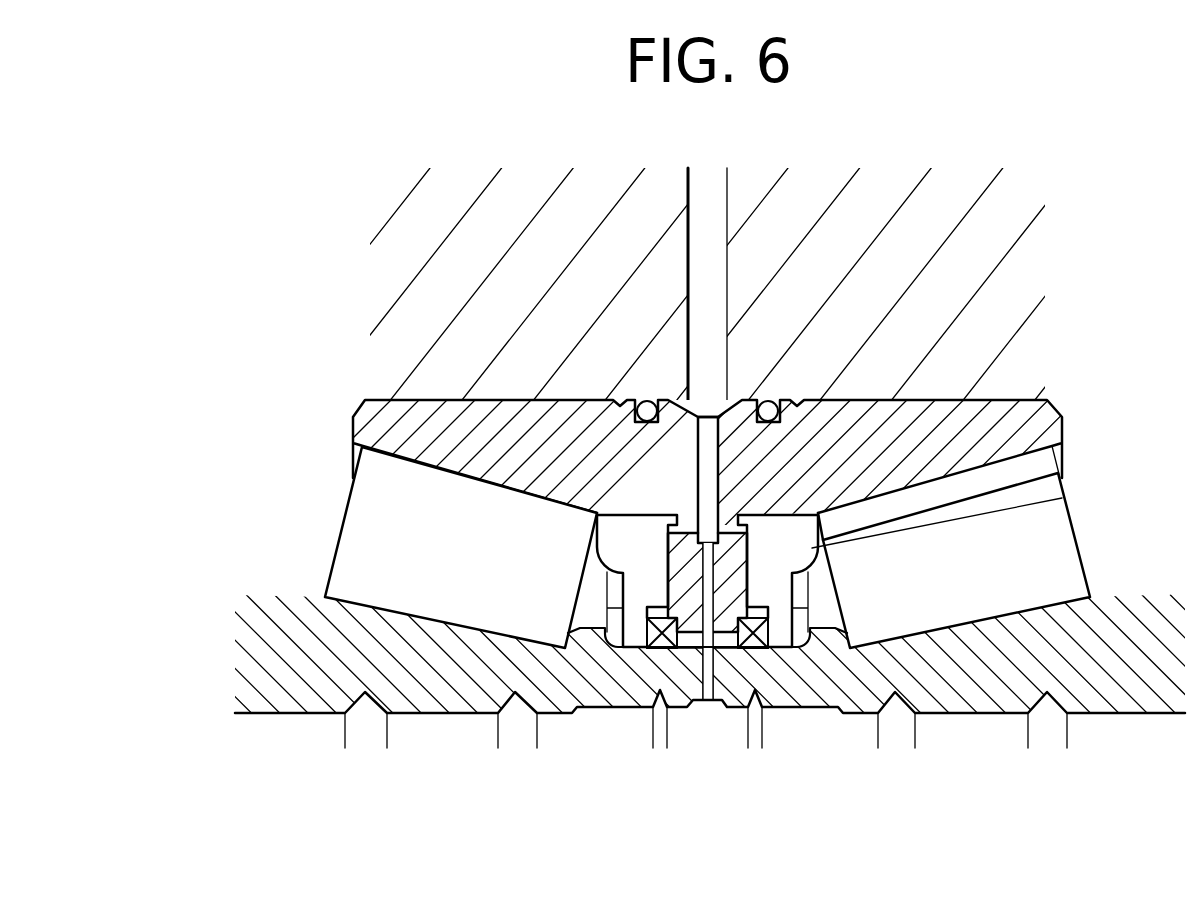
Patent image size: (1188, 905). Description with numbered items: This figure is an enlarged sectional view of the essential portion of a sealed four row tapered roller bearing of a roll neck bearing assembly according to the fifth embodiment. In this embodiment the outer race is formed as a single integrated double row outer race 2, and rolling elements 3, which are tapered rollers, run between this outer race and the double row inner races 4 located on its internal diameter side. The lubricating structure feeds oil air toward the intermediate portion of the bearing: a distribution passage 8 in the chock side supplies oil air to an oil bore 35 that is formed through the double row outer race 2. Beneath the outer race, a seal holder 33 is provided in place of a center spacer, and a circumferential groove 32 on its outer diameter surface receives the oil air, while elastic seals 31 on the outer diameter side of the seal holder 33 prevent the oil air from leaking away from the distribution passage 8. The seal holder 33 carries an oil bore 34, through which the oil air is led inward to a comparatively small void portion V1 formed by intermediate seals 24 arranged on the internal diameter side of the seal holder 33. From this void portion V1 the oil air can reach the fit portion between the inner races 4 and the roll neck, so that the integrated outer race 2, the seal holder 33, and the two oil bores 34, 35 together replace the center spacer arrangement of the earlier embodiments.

The double row outer race 2 is at (923, 427).
The rolling elements 3 is at (1040, 527).
The double row inner races 4 is at (972, 698).
The distribution passages 8 is at (717, 265).
The intermediate seals 24 is at (668, 638).
The elastic seals 31 is at (768, 403).
The circumferential groove 32 is at (707, 455).
The seal holder 33 is at (742, 560).
The oil bore 34 is at (708, 562).
The oil bore 35 is at (647, 400).
The void portion V1 is at (699, 640).